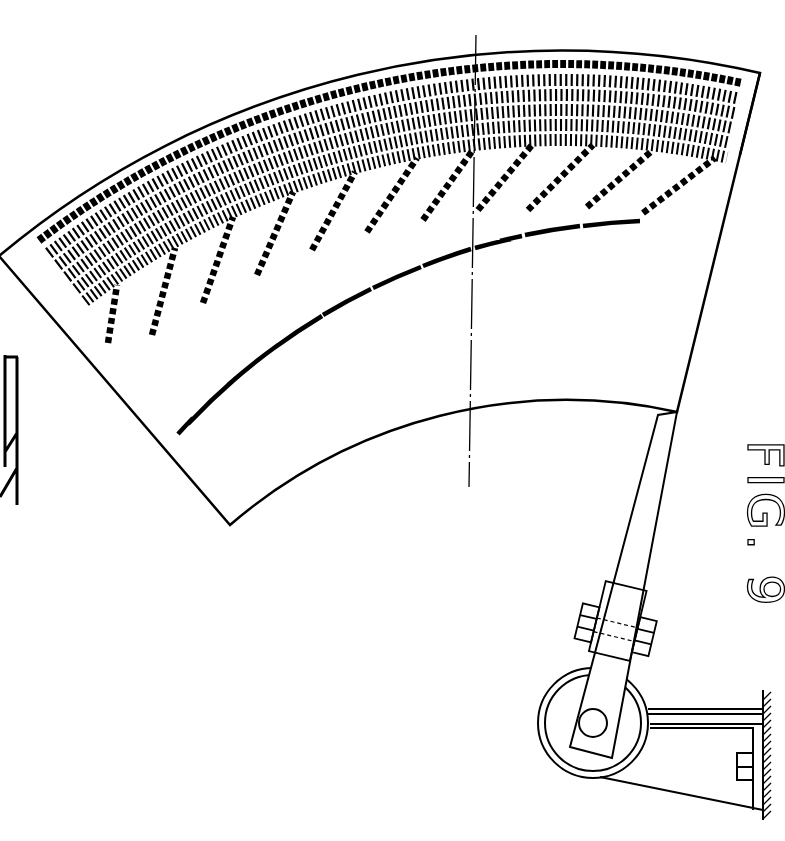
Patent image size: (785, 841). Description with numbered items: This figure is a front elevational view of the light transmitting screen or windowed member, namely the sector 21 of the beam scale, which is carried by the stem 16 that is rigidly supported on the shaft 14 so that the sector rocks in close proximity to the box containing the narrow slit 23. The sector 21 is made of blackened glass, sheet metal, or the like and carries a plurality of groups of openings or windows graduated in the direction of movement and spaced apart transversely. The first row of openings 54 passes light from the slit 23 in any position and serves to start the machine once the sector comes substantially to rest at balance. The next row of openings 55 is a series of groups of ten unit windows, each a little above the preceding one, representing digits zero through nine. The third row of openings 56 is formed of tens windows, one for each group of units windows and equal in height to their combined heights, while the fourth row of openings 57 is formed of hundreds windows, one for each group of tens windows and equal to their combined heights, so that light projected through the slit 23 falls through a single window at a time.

The shaft 14 is at (585, 730).
The stem 16 is at (635, 537).
The sector 21 is at (380, 288).
The slit 23 is at (476, 302).
The first row of openings 54 is at (758, 70).
The second row of openings 55 is at (722, 132).
The third row of openings 56 is at (678, 191).
The fourth row of openings 57 is at (621, 228).